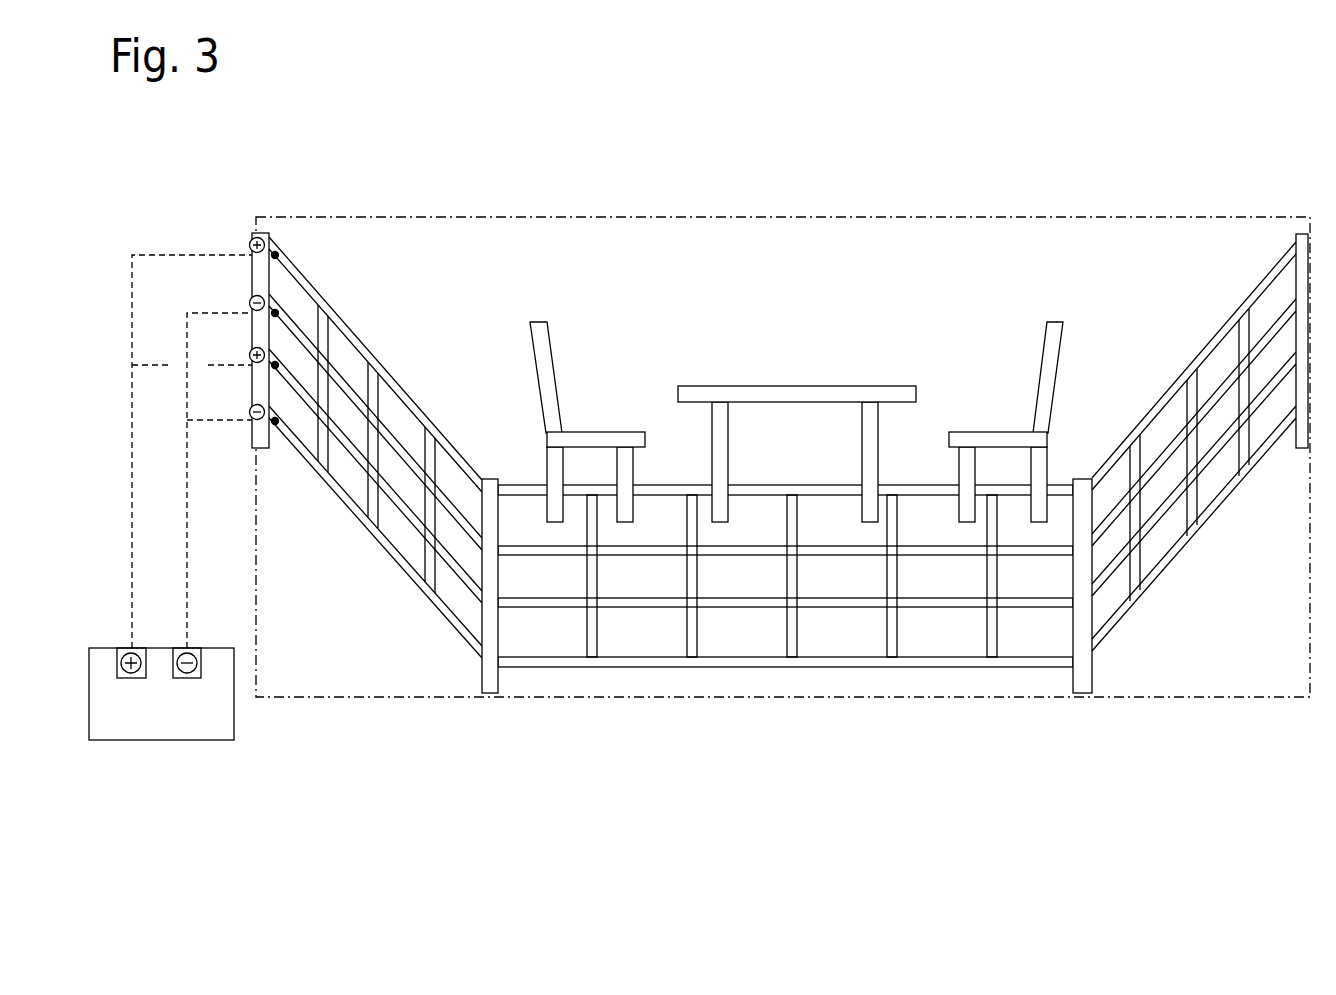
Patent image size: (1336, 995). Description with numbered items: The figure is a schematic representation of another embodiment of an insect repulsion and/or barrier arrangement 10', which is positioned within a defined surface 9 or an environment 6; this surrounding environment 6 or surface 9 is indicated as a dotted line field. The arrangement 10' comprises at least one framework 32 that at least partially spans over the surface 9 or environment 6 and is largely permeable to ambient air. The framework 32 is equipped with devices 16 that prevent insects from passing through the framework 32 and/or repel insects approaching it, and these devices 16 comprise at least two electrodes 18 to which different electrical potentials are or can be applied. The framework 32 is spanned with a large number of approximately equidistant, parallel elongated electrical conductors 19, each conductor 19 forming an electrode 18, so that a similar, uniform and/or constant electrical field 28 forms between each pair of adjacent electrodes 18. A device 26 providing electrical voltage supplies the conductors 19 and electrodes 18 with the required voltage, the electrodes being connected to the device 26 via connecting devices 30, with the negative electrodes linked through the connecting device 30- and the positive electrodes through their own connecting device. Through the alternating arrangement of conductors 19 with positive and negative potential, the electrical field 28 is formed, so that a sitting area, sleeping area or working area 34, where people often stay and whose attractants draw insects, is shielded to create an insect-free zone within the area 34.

The environment 6 is at (783, 408).
The defined surface 9 is at (783, 408).
The insect repulsion and/or barrier arrangement 10' is at (783, 408).
The devices 16 is at (366, 444).
The electrodes 18 is at (785, 610).
The elongated electrical conductors 19 is at (955, 662).
The device providing electrical voltage 26 is at (234, 717).
The electrical field 28 is at (836, 250).
The connecting devices 30 is at (178, 423).
The negative connecting device 30- is at (168, 255).
The framework 32 is at (492, 688).
The sitting, sleeping or working area 34 is at (877, 386).